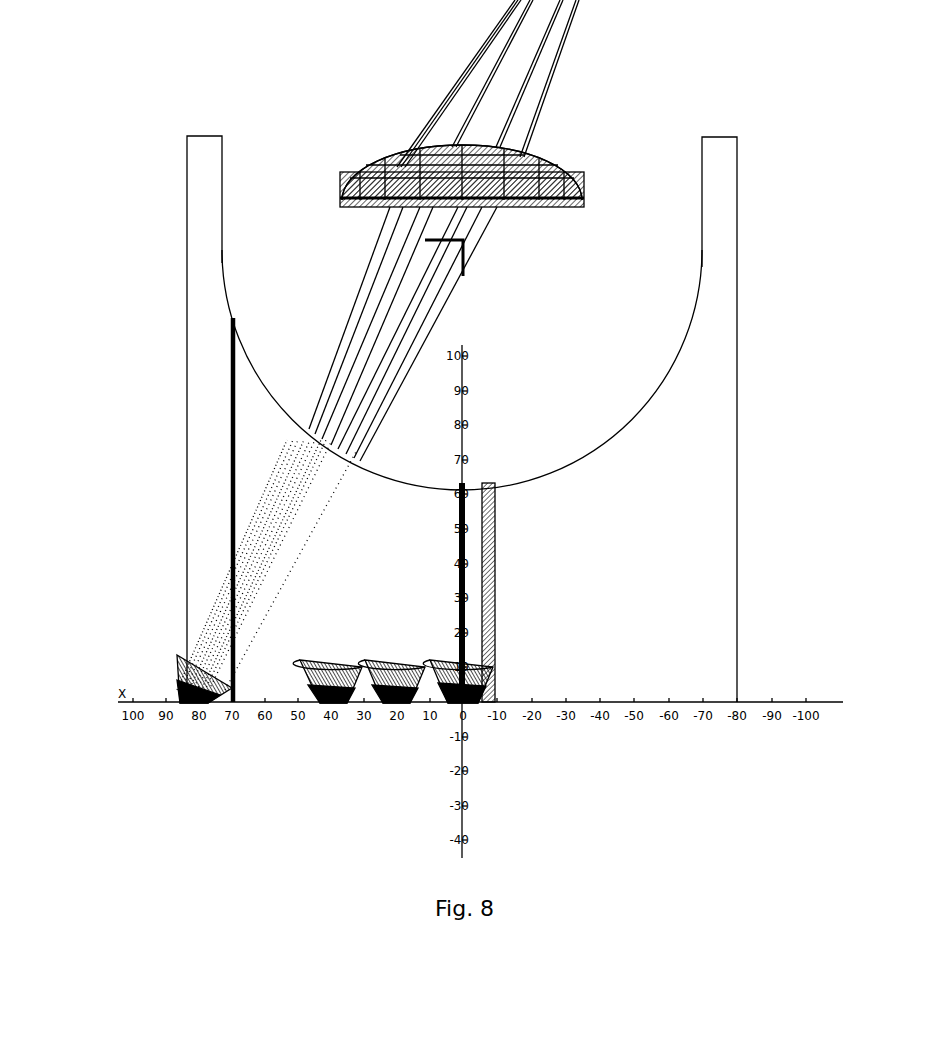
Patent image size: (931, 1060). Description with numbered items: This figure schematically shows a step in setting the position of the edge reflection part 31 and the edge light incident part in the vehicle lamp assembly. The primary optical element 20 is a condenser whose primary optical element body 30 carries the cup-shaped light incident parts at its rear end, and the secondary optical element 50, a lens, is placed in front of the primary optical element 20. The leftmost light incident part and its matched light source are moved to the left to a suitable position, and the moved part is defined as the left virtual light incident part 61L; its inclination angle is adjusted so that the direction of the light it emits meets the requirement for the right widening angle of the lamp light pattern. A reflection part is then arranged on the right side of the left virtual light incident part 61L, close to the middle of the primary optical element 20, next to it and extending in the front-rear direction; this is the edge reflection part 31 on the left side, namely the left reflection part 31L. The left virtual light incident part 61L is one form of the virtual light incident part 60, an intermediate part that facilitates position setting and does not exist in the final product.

The primary optical element 20 is at (737, 415).
The primary optical element body 30 is at (690, 604).
The edge reflection part 31 is at (233, 430).
The left reflection part 31L is at (291, 334).
The secondary optical element 50 is at (553, 176).
The virtual light incident part 60 is at (177, 668).
The left virtual light incident part 61L is at (217, 565).